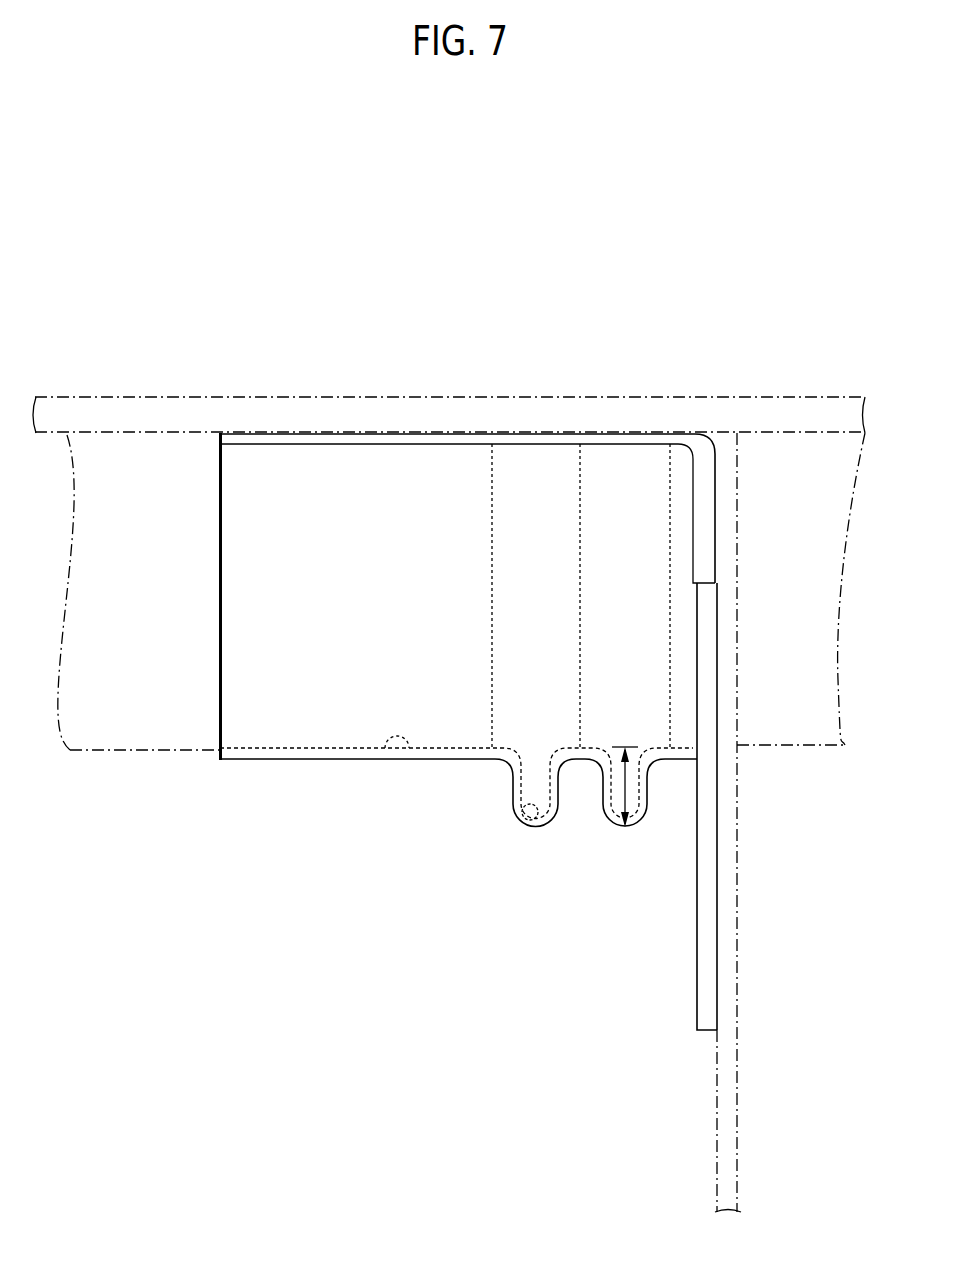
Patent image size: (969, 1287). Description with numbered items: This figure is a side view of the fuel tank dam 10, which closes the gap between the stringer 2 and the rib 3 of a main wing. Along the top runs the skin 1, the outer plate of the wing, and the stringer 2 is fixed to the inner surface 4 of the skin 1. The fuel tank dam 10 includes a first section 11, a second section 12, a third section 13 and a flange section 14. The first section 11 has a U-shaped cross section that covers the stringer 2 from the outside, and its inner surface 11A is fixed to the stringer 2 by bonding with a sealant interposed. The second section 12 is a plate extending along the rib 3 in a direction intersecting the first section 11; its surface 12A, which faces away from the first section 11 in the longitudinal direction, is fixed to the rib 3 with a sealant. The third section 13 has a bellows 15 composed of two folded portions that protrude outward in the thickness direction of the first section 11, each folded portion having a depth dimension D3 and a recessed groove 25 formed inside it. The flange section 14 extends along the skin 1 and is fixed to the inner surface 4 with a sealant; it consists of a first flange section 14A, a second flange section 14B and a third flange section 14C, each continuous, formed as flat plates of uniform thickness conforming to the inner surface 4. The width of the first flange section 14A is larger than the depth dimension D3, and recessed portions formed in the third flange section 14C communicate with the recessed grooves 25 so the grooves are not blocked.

The skin 1 is at (271, 412).
The stringer 2 is at (825, 575).
The rib 3 is at (730, 982).
The inner surface 4 is at (128, 436).
The fuel tank dam 10 is at (257, 765).
The first section 11 is at (340, 722).
The inner surface 11A is at (397, 760).
The second section 12 is at (738, 806).
The surface 12A is at (718, 830).
The third section 13 is at (530, 735).
The flange section 14 is at (439, 615).
The first flange section 14A is at (363, 433).
The second flange section 14B is at (538, 432).
The third flange section 14C is at (673, 433).
The bellows 15 is at (597, 797).
The recessed groove 25 is at (533, 822).
The depth dimension D3 is at (643, 793).